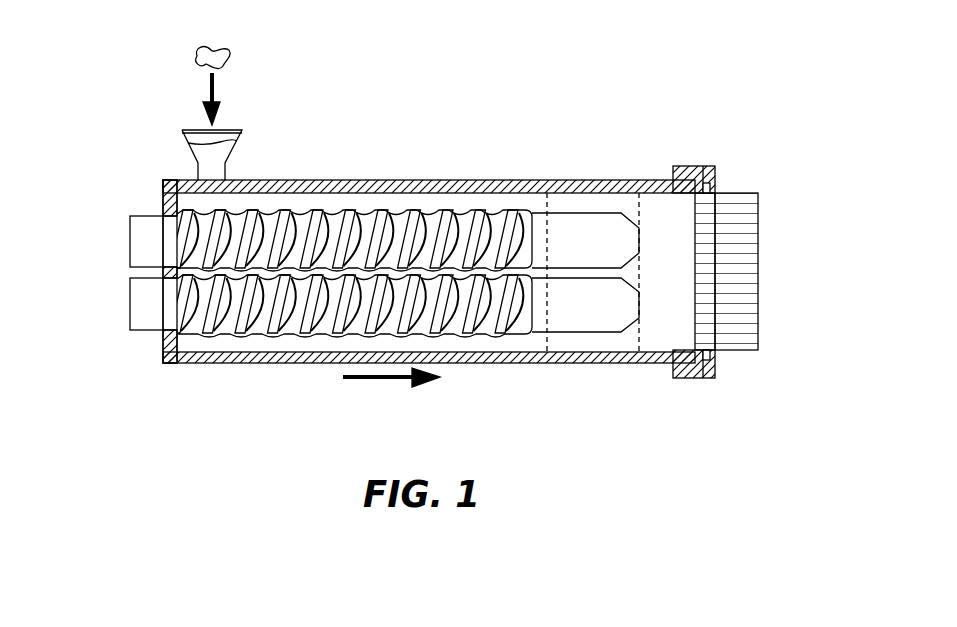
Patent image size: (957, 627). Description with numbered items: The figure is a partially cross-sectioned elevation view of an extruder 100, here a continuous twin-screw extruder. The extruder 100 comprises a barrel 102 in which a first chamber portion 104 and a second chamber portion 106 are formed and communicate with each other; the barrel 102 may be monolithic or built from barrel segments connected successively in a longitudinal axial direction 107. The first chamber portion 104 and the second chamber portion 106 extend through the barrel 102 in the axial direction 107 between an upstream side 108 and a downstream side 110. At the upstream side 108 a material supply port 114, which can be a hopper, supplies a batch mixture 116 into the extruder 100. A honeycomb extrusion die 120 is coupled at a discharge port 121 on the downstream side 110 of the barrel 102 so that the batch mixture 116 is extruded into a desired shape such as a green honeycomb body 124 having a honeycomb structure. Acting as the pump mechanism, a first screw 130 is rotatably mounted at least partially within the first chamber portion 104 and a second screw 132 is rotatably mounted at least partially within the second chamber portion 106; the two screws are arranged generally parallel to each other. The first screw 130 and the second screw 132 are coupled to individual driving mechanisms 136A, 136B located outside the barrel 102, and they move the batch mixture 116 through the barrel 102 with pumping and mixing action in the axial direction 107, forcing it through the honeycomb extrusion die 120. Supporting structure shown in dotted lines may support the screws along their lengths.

The extruder 100 is at (453, 100).
The barrel 102 is at (416, 289).
The first chamber portion 104 is at (418, 200).
The second chamber portion 106 is at (350, 341).
The axial direction 107 is at (380, 382).
The upstream side 108 is at (178, 380).
The downstream side 110 is at (667, 160).
The material supply port 114 is at (192, 155).
The batch mixture 116 is at (232, 63).
The honeycomb extrusion die 120 is at (722, 200).
The discharge port 121 is at (676, 216).
The green honeycomb body 124 is at (739, 365).
The first screw 130 is at (452, 200).
The second screw 132 is at (466, 354).
The driving mechanism 136A is at (149, 215).
The driving mechanism 136B is at (146, 331).